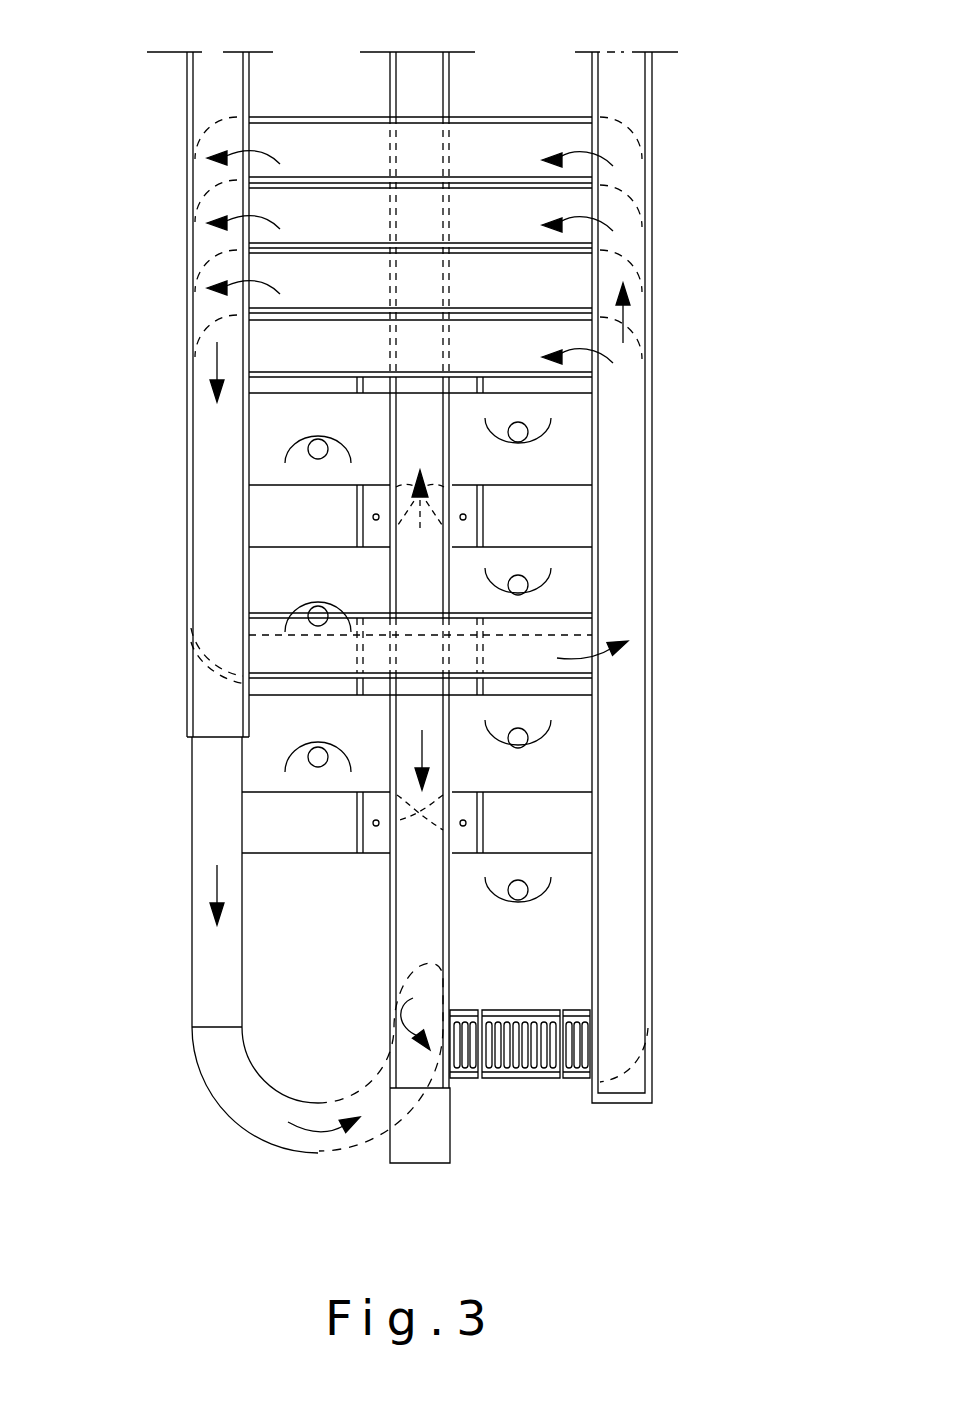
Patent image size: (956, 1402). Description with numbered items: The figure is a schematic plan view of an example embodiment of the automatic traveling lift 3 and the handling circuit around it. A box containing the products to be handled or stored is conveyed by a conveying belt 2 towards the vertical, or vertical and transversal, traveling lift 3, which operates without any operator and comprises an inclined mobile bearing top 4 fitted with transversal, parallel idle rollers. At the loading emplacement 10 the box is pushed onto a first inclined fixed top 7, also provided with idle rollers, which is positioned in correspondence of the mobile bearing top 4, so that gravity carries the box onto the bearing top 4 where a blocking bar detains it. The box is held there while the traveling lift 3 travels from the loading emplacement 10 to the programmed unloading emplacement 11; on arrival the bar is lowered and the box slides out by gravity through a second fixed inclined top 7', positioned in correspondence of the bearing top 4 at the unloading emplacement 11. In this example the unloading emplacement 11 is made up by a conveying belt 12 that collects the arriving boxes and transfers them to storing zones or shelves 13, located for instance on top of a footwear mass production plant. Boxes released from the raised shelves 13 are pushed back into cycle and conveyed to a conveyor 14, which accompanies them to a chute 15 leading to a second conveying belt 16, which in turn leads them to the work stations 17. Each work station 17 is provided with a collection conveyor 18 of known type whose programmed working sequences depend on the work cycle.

The conveying belt 2 is at (422, 1142).
The traveling lift 3 is at (530, 1077).
The mobile bearing top 4 is at (523, 1020).
The first inclined fixed top 7 is at (480, 1067).
The second fixed inclined top 7' is at (563, 1015).
The loading emplacement 10 is at (416, 1015).
The unloading emplacement 11 is at (621, 1051).
The conveying belt 12 is at (628, 620).
The storing zones or shelves 13 is at (495, 212).
The conveyor 14 is at (212, 455).
The chute 15 is at (210, 943).
The second conveying belt 16 is at (410, 438).
The work stations 17 is at (287, 533).
The collection conveyor 18 is at (447, 506).